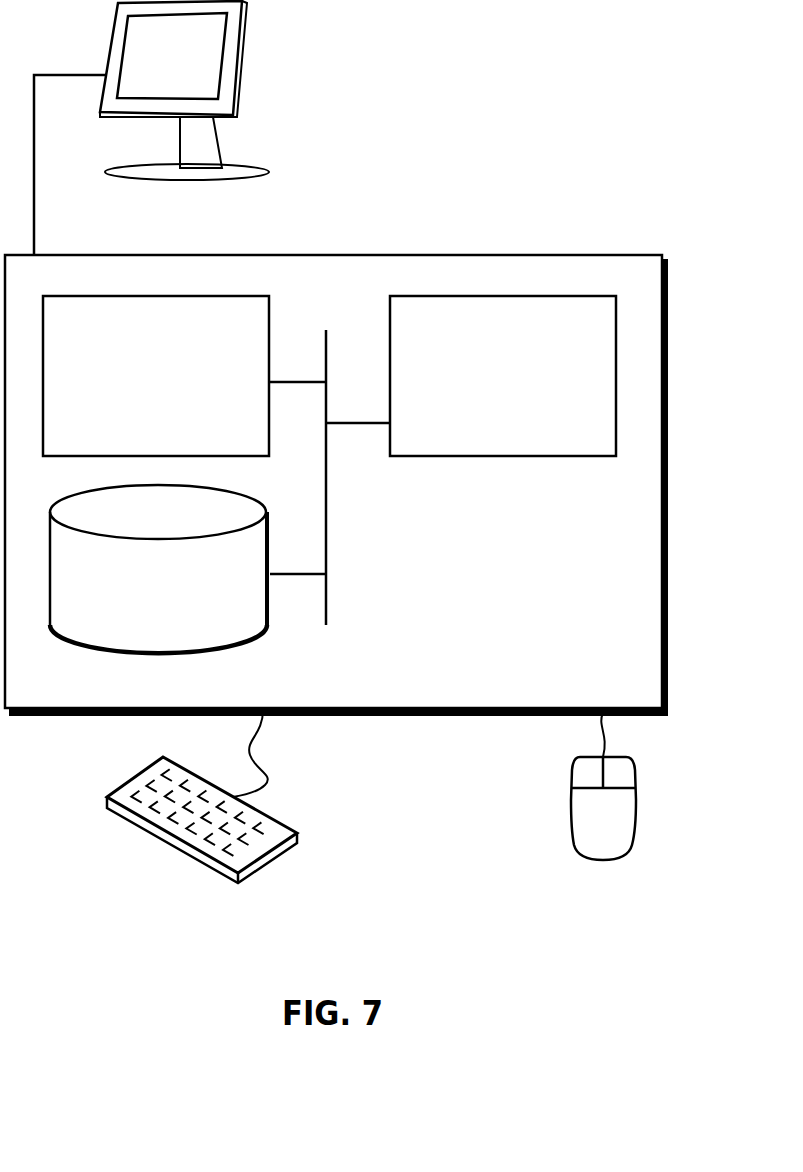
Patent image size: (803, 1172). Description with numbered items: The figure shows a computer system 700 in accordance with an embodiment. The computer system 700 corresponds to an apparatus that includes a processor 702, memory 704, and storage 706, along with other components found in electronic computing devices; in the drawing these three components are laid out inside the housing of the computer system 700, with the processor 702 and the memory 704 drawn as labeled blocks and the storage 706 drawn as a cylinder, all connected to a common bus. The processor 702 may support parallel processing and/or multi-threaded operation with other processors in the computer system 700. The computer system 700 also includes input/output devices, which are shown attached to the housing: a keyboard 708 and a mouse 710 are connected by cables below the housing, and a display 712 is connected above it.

The computer system 700 is at (380, 233).
The processor 702 is at (527, 387).
The memory 704 is at (177, 387).
The storage device 706 is at (182, 598).
The keyboard 708 is at (127, 817).
The mouse 710 is at (623, 829).
The display monitor 712 is at (151, 128).